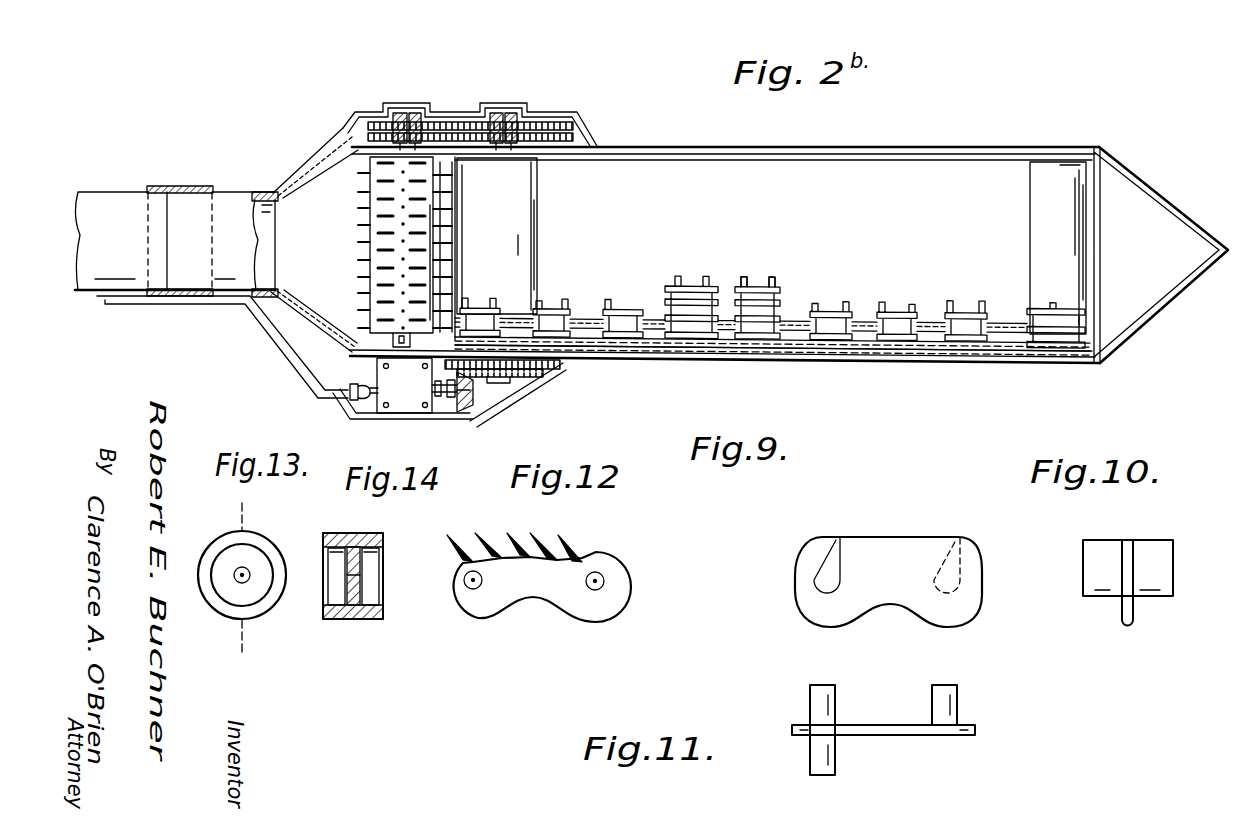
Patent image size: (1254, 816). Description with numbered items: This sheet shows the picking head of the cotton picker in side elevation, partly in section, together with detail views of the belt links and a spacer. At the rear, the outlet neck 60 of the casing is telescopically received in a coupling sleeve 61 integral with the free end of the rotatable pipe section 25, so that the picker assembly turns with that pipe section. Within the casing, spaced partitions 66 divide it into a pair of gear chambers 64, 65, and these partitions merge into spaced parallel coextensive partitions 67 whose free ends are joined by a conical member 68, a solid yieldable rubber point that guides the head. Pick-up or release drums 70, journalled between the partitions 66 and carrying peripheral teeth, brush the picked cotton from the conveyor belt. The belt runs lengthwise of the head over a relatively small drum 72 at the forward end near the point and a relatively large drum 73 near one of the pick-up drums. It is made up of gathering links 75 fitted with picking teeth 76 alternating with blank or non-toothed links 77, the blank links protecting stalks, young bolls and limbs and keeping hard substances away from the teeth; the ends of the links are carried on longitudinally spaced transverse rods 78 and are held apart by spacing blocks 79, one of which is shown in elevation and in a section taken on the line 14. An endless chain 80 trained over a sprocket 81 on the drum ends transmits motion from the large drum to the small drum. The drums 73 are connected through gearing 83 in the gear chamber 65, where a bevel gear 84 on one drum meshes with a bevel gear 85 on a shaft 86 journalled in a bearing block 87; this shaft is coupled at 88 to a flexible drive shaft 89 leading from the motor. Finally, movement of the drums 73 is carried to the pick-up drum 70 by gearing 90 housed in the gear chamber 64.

In FIG. 2B, the rotatable pipe section 25 is at (98, 206).
In FIG. 2B, the coupling sleeve 61 is at (161, 187).
In FIG. 2B, the outlet neck 60 is at (229, 208).
In FIG. 2B, the pick-up or release drums 70 is at (372, 168).
In FIG. 2B, the gear chamber 64 is at (352, 114).
In FIG. 2B, the gearing 90 is at (445, 128).
In FIG. 2B, the partitions 66 is at (598, 114).
In FIG. 2B, the partitions 67 is at (788, 152).
In FIG. 2B, the small drum 72 is at (1060, 176).
In FIG. 2B, the conical member 68 is at (1162, 255).
In FIG. 2B, the large drum 73 is at (525, 200).
In FIG. 2B, the transverse rods 78 is at (771, 274).
In FIG. 2B, the gathering links 75 is at (920, 300).
In FIG. 12, the gathering links 75 is at (545, 597).
In FIG. 2B, the endless chain 80 is at (797, 344).
In FIG. 2B, the sprocket 81 is at (1052, 350).
In FIG. 2B, the flexible drive shaft 89 is at (262, 322).
In FIG. 2B, the coupling 88 is at (346, 396).
In FIG. 2B, the bearing block 87 is at (417, 385).
In FIG. 2B, the shaft 86 is at (447, 400).
In FIG. 2B, the bevel gear 85 is at (482, 416).
In FIG. 2B, the gear chamber 65 is at (507, 395).
In FIG. 2B, the gearing 83 is at (540, 372).
In FIG. 2B, the bevel gear 84 is at (545, 381).
In FIG. 13, the spacing blocks 79 is at (263, 537).
In FIG. 14, the spacing blocks 79 is at (380, 536).
In FIG. 13, the section line 14 is at (241, 584).
In FIG. 12, the picking teeth 76 is at (562, 540).
In FIG. 9, the blank or non-toothed links 77 is at (816, 540).
In FIG. 10, the blank or non-toothed links 77 is at (1150, 548).
In FIG. 11, the blank or non-toothed links 77 is at (795, 727).